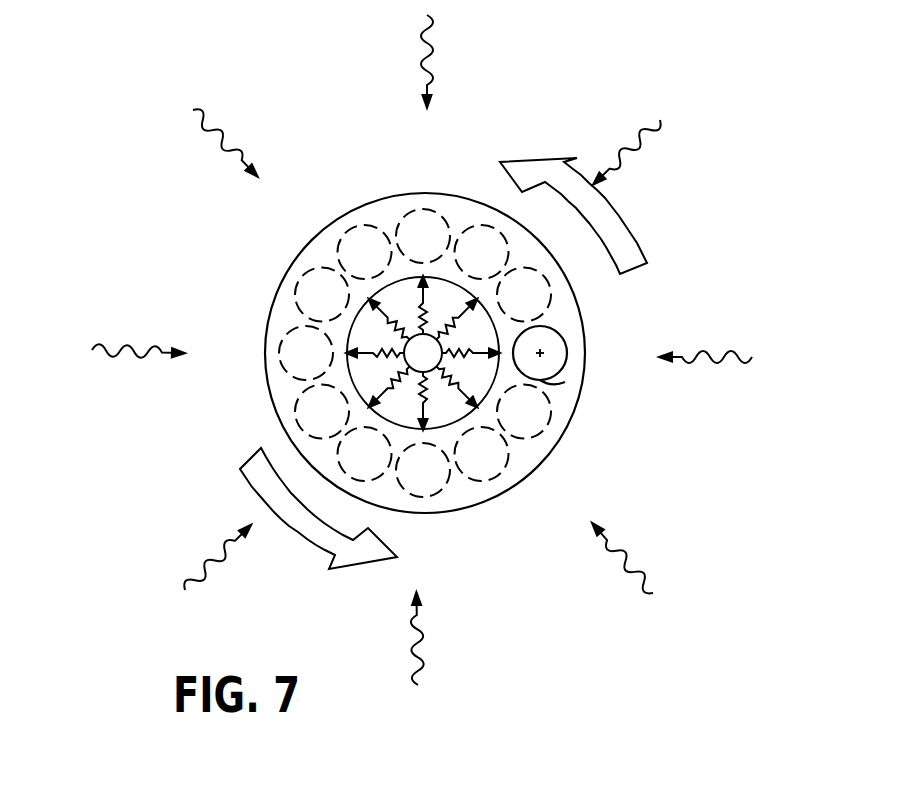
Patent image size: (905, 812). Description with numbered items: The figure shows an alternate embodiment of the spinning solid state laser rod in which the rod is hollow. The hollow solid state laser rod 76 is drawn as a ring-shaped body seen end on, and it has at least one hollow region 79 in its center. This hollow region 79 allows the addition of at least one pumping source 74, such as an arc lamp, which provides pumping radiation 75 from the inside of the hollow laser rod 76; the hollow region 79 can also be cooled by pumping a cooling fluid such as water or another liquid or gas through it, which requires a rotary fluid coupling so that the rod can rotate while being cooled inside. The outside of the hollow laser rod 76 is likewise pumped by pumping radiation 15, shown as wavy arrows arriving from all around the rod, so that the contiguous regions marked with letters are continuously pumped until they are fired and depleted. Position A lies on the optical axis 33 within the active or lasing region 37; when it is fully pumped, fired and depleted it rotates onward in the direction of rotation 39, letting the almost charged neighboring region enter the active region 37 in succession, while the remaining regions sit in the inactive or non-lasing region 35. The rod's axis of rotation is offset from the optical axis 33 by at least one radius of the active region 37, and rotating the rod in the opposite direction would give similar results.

The pumping radiation 15 is at (420, 43).
The optical axis 33 is at (562, 366).
The inactive region 35 is at (286, 288).
The active region 37 is at (565, 382).
The direction of rotation 39 is at (613, 257).
The pumping source 74 is at (402, 360).
The pumping radiation 75 is at (455, 352).
The hollow solid state laser rod 76 is at (551, 451).
The hollow region 79 is at (372, 335).
The position A is at (545, 352).